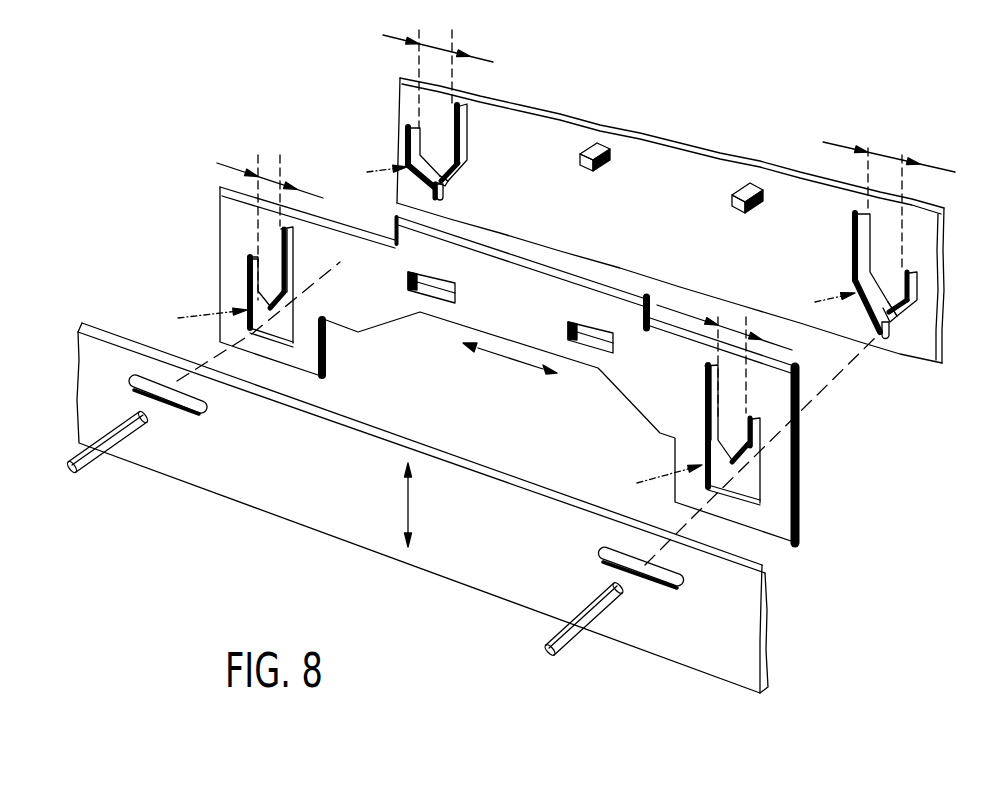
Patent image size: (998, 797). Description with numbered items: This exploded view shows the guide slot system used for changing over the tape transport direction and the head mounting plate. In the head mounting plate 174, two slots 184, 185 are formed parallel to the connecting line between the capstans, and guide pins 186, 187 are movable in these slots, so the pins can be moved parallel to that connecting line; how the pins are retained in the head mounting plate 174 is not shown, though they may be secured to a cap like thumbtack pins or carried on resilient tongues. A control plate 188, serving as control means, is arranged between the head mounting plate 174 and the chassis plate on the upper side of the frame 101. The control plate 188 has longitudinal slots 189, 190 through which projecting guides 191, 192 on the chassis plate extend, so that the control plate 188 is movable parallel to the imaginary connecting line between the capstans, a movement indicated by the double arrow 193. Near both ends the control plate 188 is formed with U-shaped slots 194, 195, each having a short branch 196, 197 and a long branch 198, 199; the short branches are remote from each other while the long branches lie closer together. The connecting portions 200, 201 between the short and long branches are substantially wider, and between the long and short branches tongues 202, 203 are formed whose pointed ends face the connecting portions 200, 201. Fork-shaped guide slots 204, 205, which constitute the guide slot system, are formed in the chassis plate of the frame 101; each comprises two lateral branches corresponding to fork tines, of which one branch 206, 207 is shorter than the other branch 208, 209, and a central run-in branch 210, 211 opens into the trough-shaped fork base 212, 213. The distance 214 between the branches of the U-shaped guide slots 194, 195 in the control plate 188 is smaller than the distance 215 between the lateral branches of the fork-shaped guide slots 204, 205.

The frame 101 is at (645, 150).
The head mounting plate 174 is at (468, 572).
The slot 184 is at (130, 396).
The slot 185 is at (672, 580).
The guide pin 186 is at (83, 447).
The guide pin 187 is at (552, 636).
The control plate 188 is at (470, 313).
The longitudinal slot 189 is at (438, 285).
The longitudinal slot 190 is at (594, 337).
The projecting guide 191 is at (590, 167).
The projecting guide 192 is at (740, 208).
The double arrow 193 is at (506, 360).
The U-shaped slot 194 is at (193, 316).
The U-shaped slot 195 is at (646, 485).
The short branch 196 is at (248, 263).
The short branch 197 is at (762, 433).
The long branch 198 is at (289, 250).
The long branch 199 is at (705, 383).
The connecting portion 200 is at (282, 331).
The connecting portion 201 is at (750, 490).
The tongue 202 is at (247, 292).
The tongue 203 is at (750, 453).
The fork-shaped guide slot 204 is at (367, 172).
The fork-shaped guide slot 205 is at (815, 301).
The shorter branch 206 is at (408, 142).
The shorter branch 207 is at (918, 284).
The longer branch 208 is at (463, 123).
The longer branch 209 is at (858, 237).
The central run-in branch 210 is at (443, 193).
The central run-in branch 211 is at (884, 338).
The fork base 212 is at (445, 182).
The fork base 213 is at (895, 310).
The distance 214 is at (262, 186).
The distance 215 is at (440, 48).